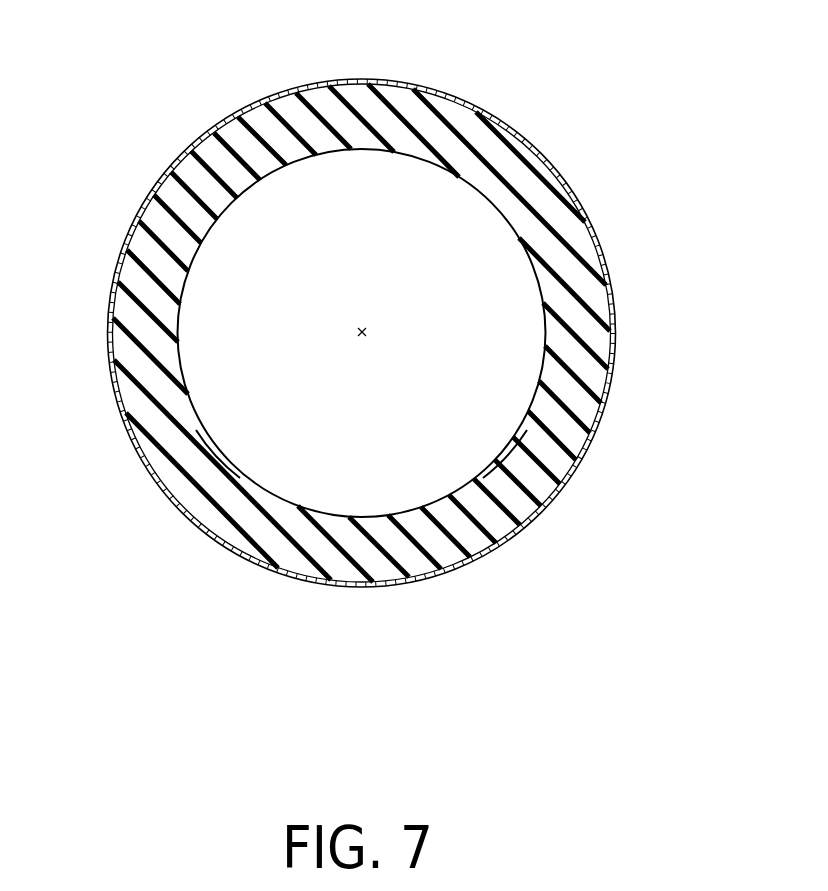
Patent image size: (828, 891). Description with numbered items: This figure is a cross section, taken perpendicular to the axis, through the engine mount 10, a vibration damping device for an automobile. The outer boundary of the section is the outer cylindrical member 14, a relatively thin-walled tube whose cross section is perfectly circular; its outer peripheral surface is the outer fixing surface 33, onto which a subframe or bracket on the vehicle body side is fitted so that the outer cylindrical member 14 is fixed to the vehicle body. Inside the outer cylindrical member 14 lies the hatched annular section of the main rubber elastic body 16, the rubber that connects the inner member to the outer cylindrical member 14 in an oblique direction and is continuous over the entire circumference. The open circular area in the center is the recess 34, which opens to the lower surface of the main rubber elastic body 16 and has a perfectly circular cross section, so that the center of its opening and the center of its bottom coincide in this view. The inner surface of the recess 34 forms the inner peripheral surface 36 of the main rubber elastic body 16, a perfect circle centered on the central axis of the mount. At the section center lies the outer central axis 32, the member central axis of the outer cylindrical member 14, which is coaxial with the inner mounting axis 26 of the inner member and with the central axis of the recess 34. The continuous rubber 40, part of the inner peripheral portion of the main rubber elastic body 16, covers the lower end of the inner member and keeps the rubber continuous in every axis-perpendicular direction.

The engine mount 10 is at (617, 100).
The outer cylindrical member 14 is at (134, 199).
The main rubber elastic body 16 is at (595, 222).
The inner mounting axis 26 is at (362, 331).
The outer central axis 32 is at (362, 332).
The outer fixing surface 33 is at (595, 418).
The recess 34 is at (219, 429).
The inner peripheral surface 36 is at (509, 453).
The continuous rubber 40 is at (387, 315).